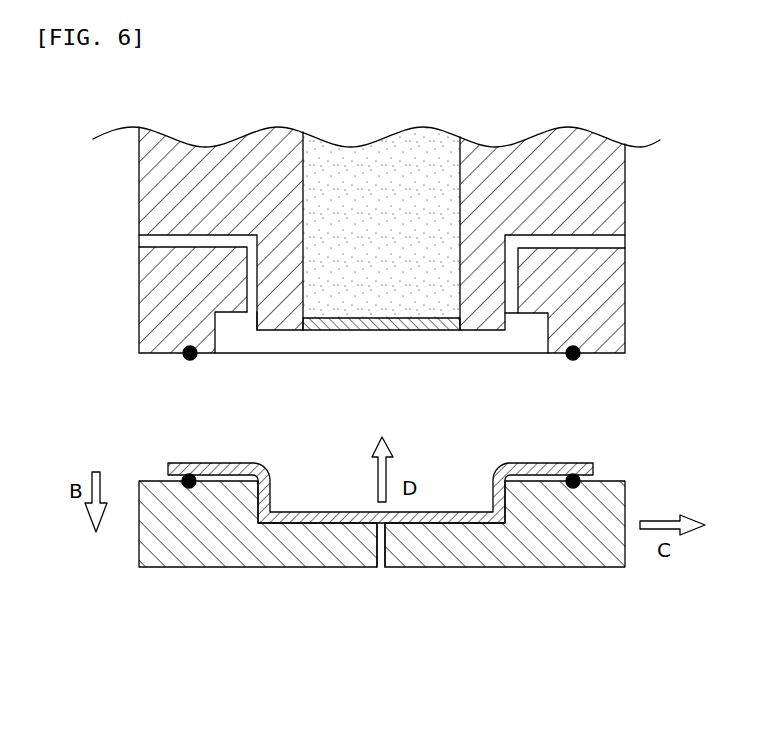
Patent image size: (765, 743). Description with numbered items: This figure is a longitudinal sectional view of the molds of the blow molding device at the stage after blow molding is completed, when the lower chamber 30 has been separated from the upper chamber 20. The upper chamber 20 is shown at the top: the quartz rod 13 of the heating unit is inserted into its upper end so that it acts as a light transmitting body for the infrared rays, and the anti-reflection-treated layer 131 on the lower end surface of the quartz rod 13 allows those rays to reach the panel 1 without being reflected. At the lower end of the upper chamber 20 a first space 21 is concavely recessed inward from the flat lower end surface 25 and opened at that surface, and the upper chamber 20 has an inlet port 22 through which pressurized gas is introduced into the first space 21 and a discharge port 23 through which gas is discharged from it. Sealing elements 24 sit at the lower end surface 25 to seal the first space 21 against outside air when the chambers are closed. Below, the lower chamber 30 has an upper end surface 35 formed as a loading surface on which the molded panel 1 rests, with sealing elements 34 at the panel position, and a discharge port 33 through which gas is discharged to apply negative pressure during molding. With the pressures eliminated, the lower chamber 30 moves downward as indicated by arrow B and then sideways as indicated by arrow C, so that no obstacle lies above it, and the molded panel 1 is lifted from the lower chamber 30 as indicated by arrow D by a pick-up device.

The panel 1 is at (535, 465).
The quartz rod 13 is at (388, 150).
The anti-reflection-treated layer 131 is at (376, 332).
The upper chamber 20 is at (634, 293).
The first space 21 is at (472, 342).
The inlet port 22 is at (175, 243).
The discharge port 23 is at (590, 240).
The sealing element 24 is at (190, 361).
The lower end surface 25 is at (600, 356).
The lower chamber 30 is at (130, 552).
The discharge port 33 is at (383, 545).
The sealing element 34 is at (189, 483).
The upper end surface 35 is at (606, 481).